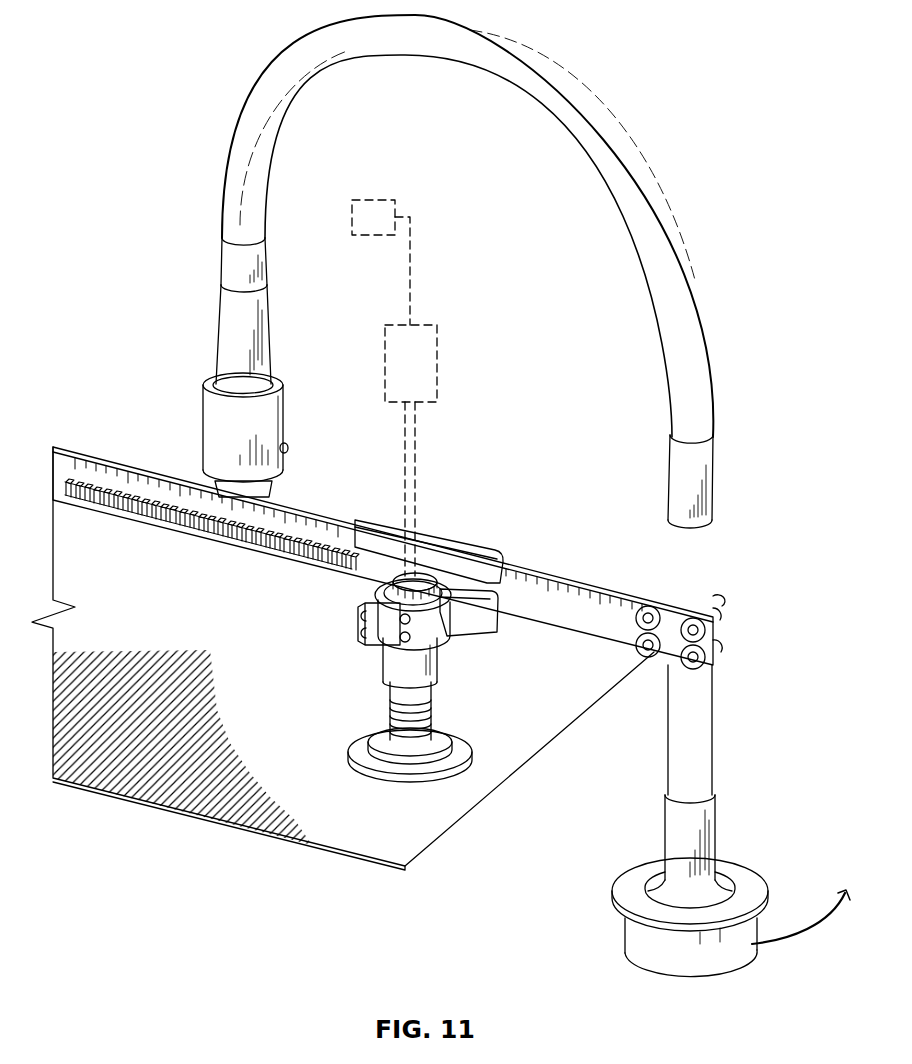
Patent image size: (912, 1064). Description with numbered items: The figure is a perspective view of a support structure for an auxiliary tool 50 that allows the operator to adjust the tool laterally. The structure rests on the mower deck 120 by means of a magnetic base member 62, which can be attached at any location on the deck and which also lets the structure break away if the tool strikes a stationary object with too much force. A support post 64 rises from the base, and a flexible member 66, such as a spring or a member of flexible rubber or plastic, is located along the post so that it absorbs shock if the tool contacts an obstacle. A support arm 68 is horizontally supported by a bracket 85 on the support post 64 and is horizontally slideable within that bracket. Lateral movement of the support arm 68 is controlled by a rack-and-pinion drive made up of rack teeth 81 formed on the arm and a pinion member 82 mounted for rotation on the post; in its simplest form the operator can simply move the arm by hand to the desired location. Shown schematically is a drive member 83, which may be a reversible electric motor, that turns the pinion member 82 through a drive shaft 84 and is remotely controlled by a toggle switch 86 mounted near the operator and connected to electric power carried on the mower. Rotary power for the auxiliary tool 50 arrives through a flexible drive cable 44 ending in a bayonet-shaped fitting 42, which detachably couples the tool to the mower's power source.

The bayonet-shaped fitting 42 is at (215, 434).
The flexible drive cable 44 is at (652, 250).
The auxiliary tool 50 is at (636, 930).
The magnetic base member 62 is at (358, 745).
The support post 64 is at (420, 655).
The flexible member 66 is at (392, 712).
The support arm 68 is at (536, 572).
The rack teeth 81 is at (160, 510).
The pinion member 82 is at (365, 605).
The drive member 83 is at (437, 362).
The drive shaft 84 is at (412, 450).
The bracket 85 is at (470, 546).
The toggle switch 86 is at (373, 216).
The mower deck 120 is at (428, 832).